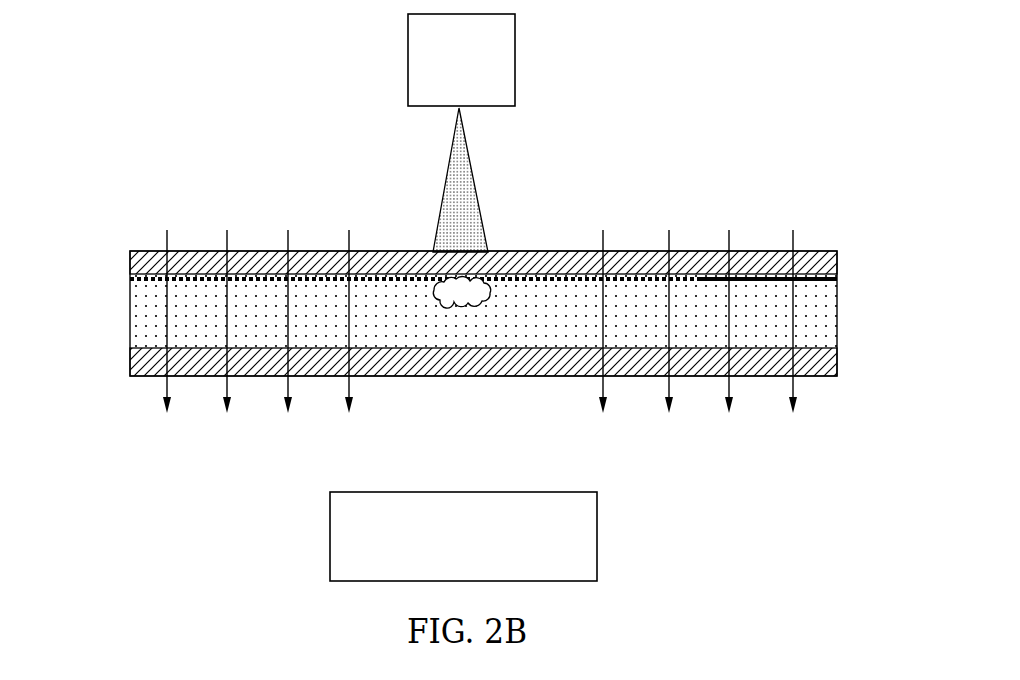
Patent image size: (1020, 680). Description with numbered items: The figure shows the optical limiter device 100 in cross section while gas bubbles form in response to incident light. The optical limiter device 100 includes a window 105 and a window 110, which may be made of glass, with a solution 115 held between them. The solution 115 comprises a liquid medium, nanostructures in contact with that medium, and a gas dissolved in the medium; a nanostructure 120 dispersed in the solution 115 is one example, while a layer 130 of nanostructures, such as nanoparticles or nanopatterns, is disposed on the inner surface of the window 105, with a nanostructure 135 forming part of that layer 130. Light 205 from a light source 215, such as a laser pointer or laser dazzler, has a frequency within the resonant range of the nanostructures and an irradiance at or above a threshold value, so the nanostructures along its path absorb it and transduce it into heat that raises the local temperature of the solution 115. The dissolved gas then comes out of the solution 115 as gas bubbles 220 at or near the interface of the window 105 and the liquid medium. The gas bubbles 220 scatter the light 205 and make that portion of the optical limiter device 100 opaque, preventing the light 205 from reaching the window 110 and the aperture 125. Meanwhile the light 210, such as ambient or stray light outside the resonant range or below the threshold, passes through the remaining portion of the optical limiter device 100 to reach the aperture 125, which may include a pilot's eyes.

The optical limiter device 100 is at (148, 134).
The window 105 is at (130, 256).
The window 110 is at (130, 365).
The solution 115 is at (835, 308).
The nanostructure 120 is at (825, 333).
The aperture 125 is at (330, 518).
The layer of nanostructures 130 is at (113, 279).
The nanostructure 135 is at (838, 280).
The light 205 is at (445, 182).
The light 210 is at (366, 230).
The light source 215 is at (408, 40).
The gas bubbles 220 is at (437, 303).